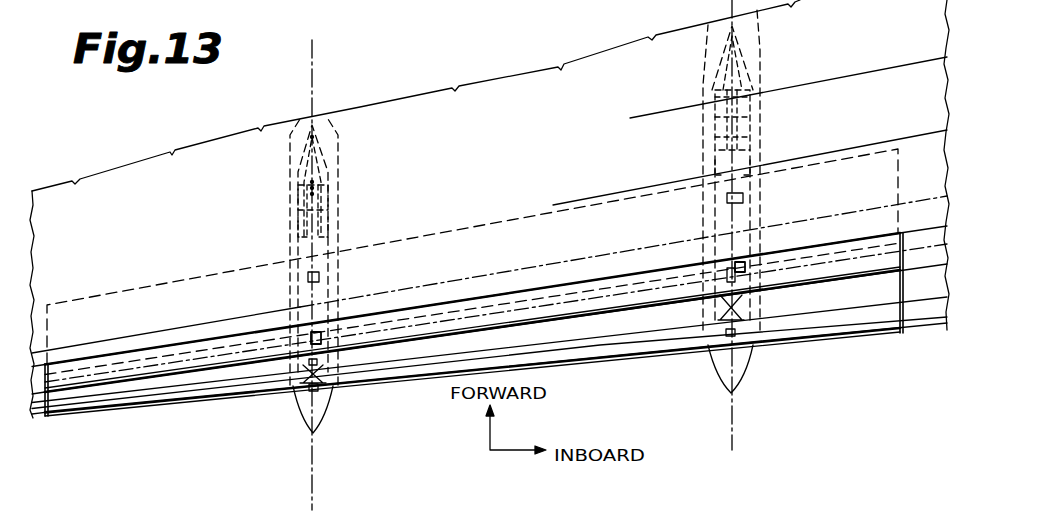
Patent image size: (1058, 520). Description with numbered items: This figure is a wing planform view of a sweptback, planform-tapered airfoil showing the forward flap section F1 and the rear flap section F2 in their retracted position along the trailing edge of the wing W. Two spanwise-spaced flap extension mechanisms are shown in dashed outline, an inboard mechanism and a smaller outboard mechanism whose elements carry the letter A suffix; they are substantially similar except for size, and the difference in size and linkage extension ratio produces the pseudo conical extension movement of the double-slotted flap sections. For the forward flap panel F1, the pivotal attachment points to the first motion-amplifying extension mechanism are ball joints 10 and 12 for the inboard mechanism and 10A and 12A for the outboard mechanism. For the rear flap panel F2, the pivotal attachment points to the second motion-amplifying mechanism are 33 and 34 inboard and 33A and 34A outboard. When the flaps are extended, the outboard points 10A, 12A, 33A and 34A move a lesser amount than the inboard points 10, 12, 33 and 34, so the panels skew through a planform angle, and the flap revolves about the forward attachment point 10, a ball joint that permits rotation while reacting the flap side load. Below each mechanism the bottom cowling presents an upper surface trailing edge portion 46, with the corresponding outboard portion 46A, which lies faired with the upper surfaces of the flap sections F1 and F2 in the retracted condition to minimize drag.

The wing W is at (492, 204).
The forward flap section F1 is at (518, 315).
The rear flap section F2 is at (518, 353).
The forward attachment point 10 is at (743, 198).
The outboard forward attachment point 10A is at (319, 277).
The attachment point 12 is at (742, 264).
The outboard attachment point 12A is at (320, 331).
The attachment point 33 is at (736, 281).
The outboard attachment point 33A is at (324, 366).
The attachment point 34 is at (735, 335).
The outboard attachment point 34A is at (330, 392).
The upper surface trailing edge portion 46 is at (716, 372).
The outboard upper surface trailing edge portion 46A is at (303, 418).